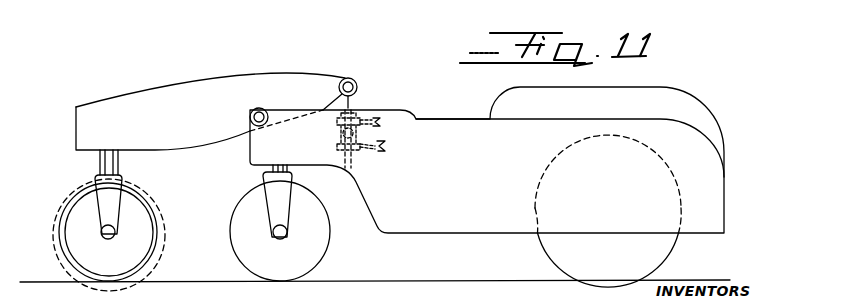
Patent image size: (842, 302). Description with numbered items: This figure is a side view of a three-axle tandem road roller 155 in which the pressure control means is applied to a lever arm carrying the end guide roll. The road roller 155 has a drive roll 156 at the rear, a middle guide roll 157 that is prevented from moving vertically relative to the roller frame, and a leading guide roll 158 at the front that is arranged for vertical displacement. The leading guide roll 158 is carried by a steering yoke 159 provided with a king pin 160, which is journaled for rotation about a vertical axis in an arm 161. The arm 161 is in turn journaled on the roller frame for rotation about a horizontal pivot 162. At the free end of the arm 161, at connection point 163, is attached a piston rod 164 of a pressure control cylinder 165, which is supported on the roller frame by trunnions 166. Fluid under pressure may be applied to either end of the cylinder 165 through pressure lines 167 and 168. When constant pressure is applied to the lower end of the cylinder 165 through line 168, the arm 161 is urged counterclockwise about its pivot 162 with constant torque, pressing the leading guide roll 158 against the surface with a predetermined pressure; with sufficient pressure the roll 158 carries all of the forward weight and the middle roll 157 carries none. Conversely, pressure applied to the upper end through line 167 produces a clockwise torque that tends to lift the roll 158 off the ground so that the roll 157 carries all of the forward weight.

The road roller 155 is at (415, 106).
The drive roll 156 is at (663, 250).
The middle guide roll 157 is at (325, 246).
The leading guide roll 158 is at (150, 250).
The steering yoke 159 is at (113, 190).
The king pin 160 is at (102, 163).
The arm 161 is at (238, 78).
The horizontal pivot 162 is at (250, 117).
The connection point 163 is at (358, 84).
The piston rod 164 is at (352, 101).
The pressure control cylinder 165 is at (336, 125).
The trunnions 166 is at (336, 146).
The pressure line 167 is at (380, 123).
The pressure line 168 is at (386, 144).